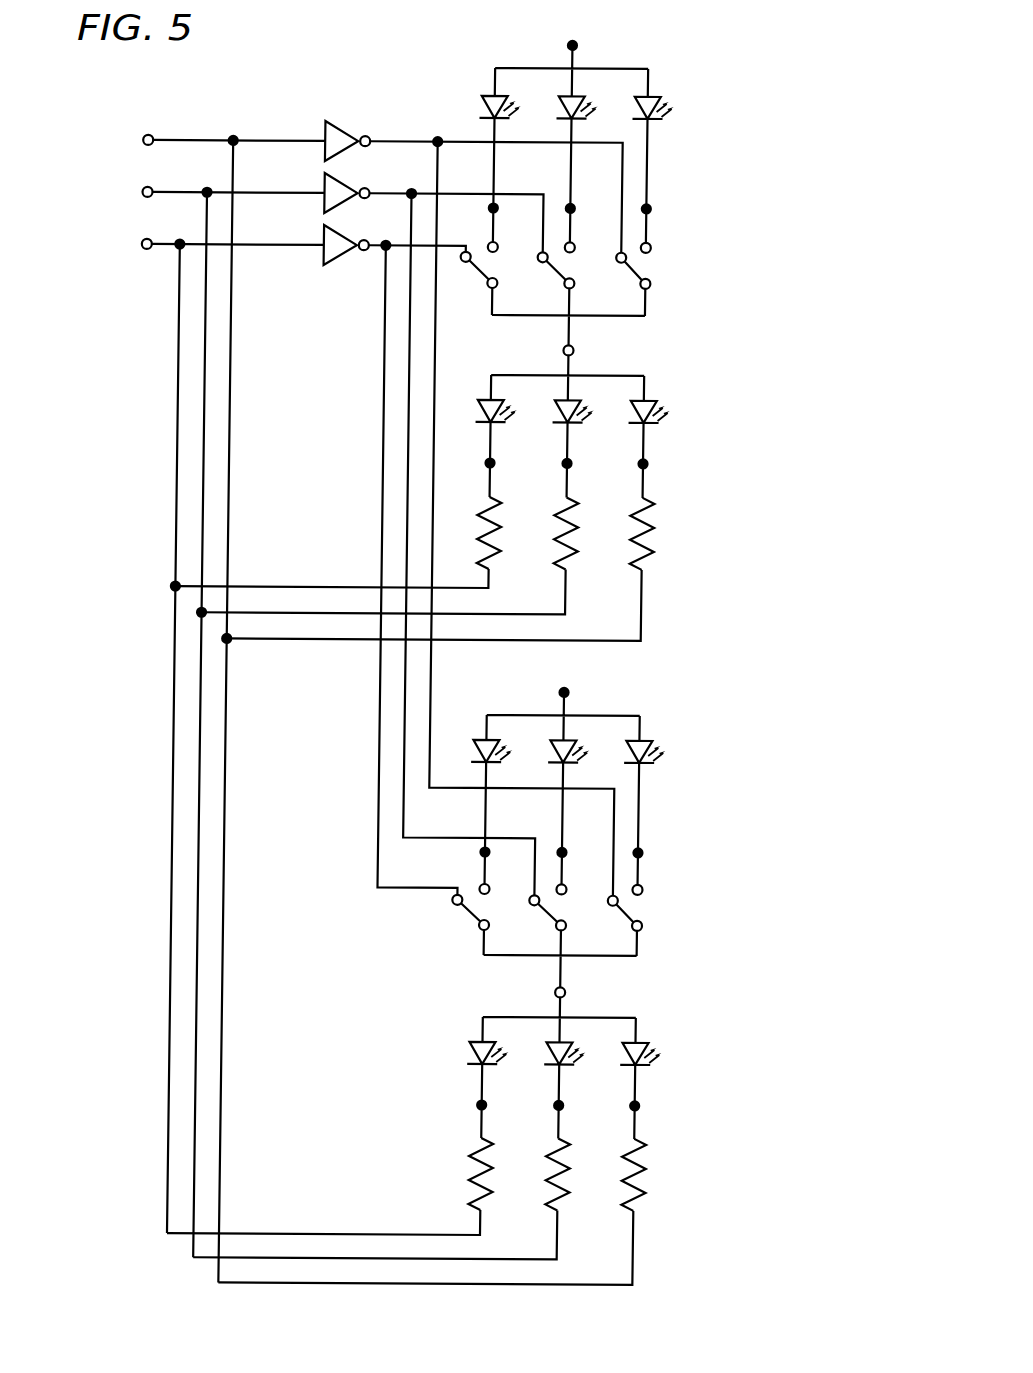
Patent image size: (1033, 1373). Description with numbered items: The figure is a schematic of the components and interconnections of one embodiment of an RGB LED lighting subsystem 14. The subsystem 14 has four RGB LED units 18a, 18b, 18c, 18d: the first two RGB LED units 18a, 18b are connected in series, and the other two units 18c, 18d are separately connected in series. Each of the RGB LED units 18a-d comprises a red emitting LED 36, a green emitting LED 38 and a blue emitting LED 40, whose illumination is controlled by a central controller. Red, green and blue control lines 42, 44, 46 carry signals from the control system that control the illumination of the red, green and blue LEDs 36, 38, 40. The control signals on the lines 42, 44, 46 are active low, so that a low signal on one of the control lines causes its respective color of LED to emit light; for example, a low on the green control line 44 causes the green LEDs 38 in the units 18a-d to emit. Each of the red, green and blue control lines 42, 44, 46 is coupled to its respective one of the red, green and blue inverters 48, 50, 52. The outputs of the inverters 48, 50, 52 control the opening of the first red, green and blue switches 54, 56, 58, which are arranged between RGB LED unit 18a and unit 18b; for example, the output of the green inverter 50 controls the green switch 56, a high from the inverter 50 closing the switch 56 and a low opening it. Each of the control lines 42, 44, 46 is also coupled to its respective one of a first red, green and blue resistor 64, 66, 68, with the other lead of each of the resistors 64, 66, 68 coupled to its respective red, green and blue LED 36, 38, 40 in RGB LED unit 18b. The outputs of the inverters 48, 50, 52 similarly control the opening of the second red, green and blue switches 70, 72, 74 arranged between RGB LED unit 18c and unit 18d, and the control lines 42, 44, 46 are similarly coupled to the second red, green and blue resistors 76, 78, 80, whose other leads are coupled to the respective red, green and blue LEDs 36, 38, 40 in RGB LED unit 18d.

The lighting subsystem 14 is at (110, 362).
The RGB LED unit 18a is at (700, 55).
The RGB LED unit 18b is at (700, 364).
The RGB LED unit 18c is at (699, 704).
The RGB LED unit 18d is at (699, 1004).
The red emitting LED 36 is at (480, 99).
The green emitting LED 38 is at (557, 99).
The blue emitting LED 40 is at (633, 99).
The red control line 42 is at (144, 243).
The green control line 44 is at (144, 191).
The blue control line 46 is at (144, 139).
The red inverter 48 is at (346, 257).
The green inverter 50 is at (321, 201).
The blue inverter 52 is at (348, 130).
The first red switch 54 is at (489, 263).
The first green switch 56 is at (566, 263).
The first blue switch 58 is at (643, 263).
The first red resistor 64 is at (505, 512).
The first green resistor 66 is at (582, 512).
The first blue resistor 68 is at (658, 512).
The second red switch 70 is at (489, 906).
The second green switch 72 is at (566, 906).
The second blue switch 74 is at (643, 906).
The second red resistor 76 is at (505, 1152).
The second green resistor 78 is at (582, 1152).
The second blue resistor 80 is at (658, 1152).